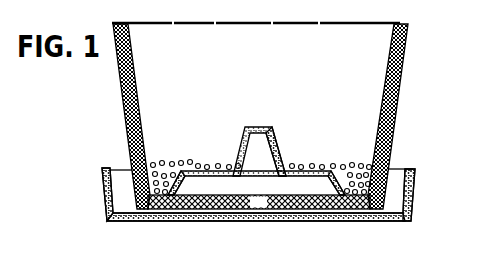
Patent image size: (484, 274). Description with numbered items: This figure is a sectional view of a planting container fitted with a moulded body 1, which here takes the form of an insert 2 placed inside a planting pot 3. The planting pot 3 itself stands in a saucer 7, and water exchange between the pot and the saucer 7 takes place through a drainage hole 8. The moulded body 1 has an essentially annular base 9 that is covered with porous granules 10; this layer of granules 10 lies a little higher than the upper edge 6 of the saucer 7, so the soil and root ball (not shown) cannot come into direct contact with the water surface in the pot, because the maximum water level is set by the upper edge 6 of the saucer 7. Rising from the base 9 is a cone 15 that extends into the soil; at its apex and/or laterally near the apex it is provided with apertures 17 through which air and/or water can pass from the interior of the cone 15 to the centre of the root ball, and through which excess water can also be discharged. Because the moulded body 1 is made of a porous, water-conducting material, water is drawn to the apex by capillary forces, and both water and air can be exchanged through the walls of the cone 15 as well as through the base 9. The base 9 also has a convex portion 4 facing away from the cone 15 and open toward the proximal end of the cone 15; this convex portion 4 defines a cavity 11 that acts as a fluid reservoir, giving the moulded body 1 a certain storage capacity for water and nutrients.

The moulded body 1 is at (318, 168).
The insert 2 is at (217, 178).
The planting pot 3 is at (136, 210).
The convex portion 4 is at (192, 182).
The upper edge 6 is at (102, 168).
The saucer 7 is at (105, 207).
The drainage hole 8 is at (284, 222).
The base 9 is at (323, 177).
The porous granules 10 is at (372, 222).
The cavity 11 is at (245, 184).
The cone 15 is at (282, 146).
The apertures 17 is at (275, 127).